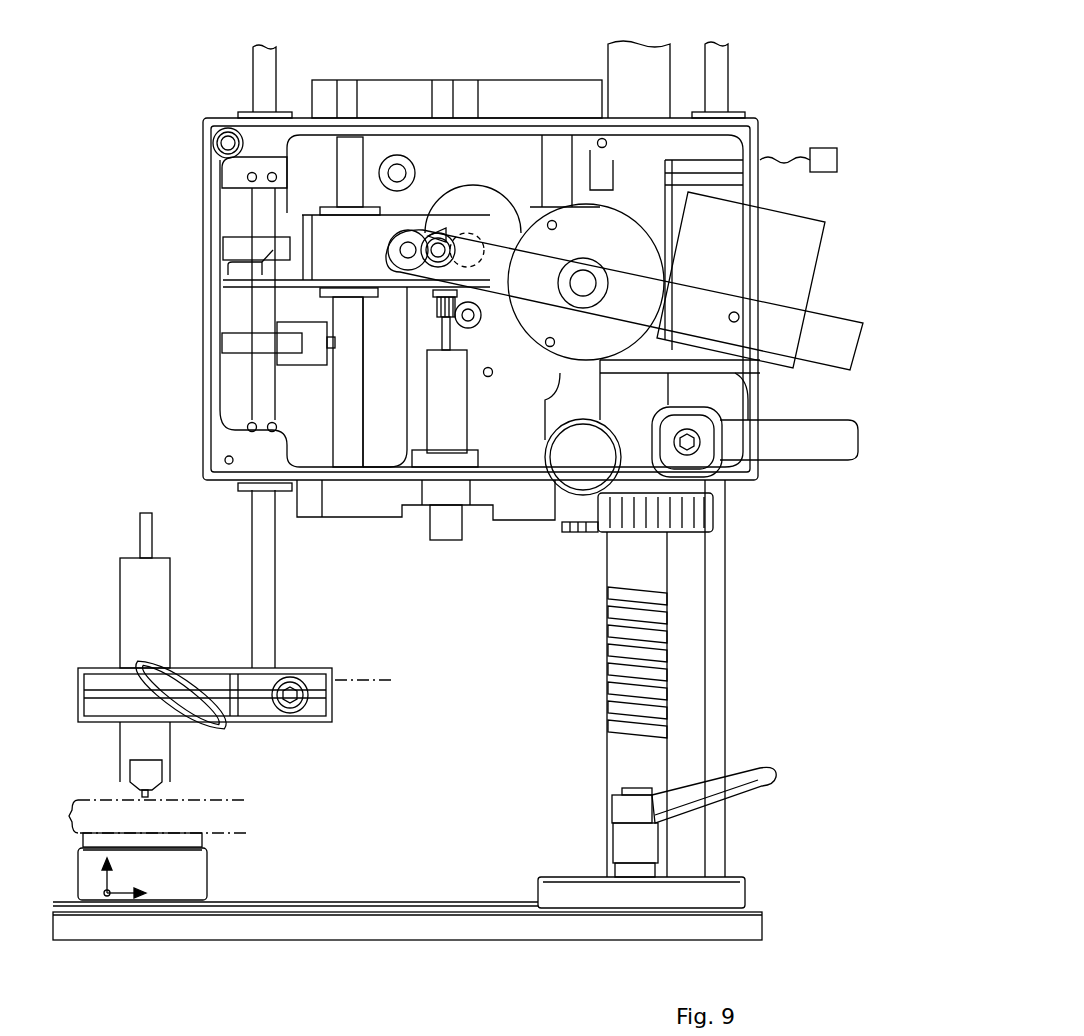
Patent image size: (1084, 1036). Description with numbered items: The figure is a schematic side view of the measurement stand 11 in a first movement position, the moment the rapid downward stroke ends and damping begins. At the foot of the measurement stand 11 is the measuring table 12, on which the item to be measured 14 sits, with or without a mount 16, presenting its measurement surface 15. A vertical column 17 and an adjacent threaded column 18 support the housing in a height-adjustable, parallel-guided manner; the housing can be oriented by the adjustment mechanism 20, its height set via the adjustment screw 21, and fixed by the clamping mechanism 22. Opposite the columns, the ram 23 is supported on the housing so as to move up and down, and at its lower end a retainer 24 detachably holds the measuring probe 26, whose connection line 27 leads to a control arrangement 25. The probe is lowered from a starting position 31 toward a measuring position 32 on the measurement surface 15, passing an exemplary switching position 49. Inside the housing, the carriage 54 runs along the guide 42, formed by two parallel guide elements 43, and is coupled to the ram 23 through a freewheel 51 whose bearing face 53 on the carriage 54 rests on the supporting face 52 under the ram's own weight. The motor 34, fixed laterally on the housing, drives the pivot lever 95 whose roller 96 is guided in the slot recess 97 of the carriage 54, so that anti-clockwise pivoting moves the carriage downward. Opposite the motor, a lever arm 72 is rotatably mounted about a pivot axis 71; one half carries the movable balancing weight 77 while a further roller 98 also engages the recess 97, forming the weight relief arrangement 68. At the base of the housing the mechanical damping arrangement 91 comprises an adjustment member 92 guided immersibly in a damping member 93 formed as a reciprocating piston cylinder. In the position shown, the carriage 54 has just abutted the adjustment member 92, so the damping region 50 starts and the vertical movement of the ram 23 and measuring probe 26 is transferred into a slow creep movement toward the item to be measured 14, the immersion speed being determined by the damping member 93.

The measurement stand 11 is at (152, 360).
The measuring table 12 is at (352, 912).
The item to be measured 14 is at (178, 833).
The measurement surface 15 is at (110, 832).
The mount 16 is at (195, 876).
The column 17 is at (725, 653).
The threaded column 18 is at (617, 758).
The adjustment mechanism 20 is at (590, 612).
The adjustment screw 21 is at (603, 527).
The clamping mechanism 22 is at (786, 484).
The ram 23 is at (262, 548).
The retainer 24 is at (333, 697).
The control arrangement 25 is at (822, 148).
The measuring probe 26 is at (130, 650).
The connection line 27 is at (145, 540).
The starting position 31 is at (364, 676).
The measuring position 32 is at (232, 831).
The motor 34 is at (528, 90).
The guide 42 is at (325, 378).
The guide elements 43 is at (552, 363).
The position 49 is at (232, 798).
The damping region 50 is at (61, 816).
The freewheel 51 is at (156, 222).
The supporting face 52 is at (233, 262).
The bearing face 53 is at (262, 250).
The carriage 54 is at (327, 233).
The weight relief arrangement 68 is at (583, 192).
The pivot axis 71 is at (588, 283).
The lever arm 72 is at (523, 265).
The balancing weight 77 is at (782, 235).
The mechanical damping arrangement 91 is at (423, 535).
The adjustment member 92 is at (442, 338).
The damping member 93 is at (457, 430).
The pivot lever 95 is at (473, 197).
The roller 96 is at (416, 238).
The slot recess 97 is at (390, 242).
The further roller 98 is at (440, 235).